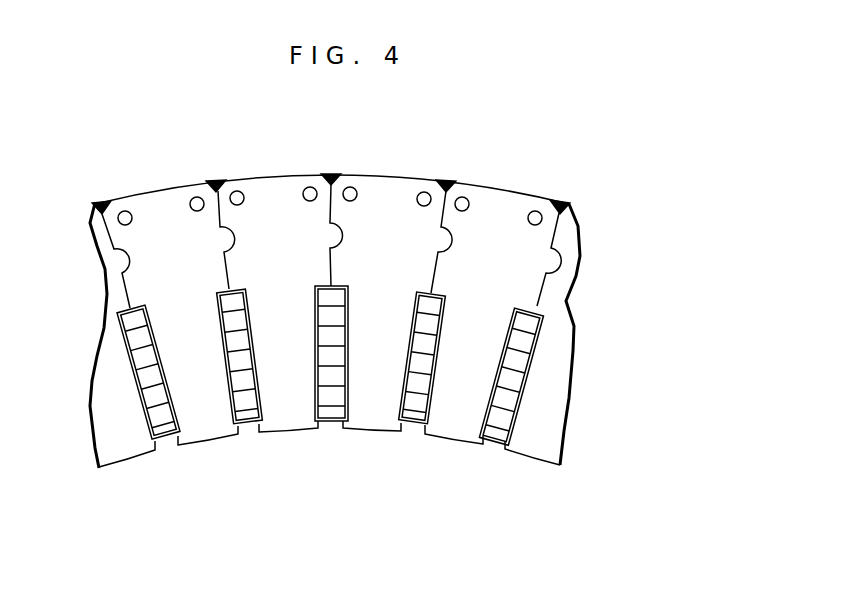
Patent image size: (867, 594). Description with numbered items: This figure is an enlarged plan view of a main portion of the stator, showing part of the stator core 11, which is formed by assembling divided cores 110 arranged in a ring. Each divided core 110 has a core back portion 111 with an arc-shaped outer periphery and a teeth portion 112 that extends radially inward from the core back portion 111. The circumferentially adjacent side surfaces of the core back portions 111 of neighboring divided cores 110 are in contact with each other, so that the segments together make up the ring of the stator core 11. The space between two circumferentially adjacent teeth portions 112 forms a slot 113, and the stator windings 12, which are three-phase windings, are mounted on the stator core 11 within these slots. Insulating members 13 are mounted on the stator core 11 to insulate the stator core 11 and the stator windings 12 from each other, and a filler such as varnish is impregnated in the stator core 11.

The stator core 11 is at (137, 156).
The divided core 110 is at (500, 177).
The core back portion 111 is at (266, 202).
The teeth portion 112 is at (287, 370).
The slot 113 is at (247, 430).
The stator winding 12 is at (420, 398).
The insulating member 13 is at (347, 297).